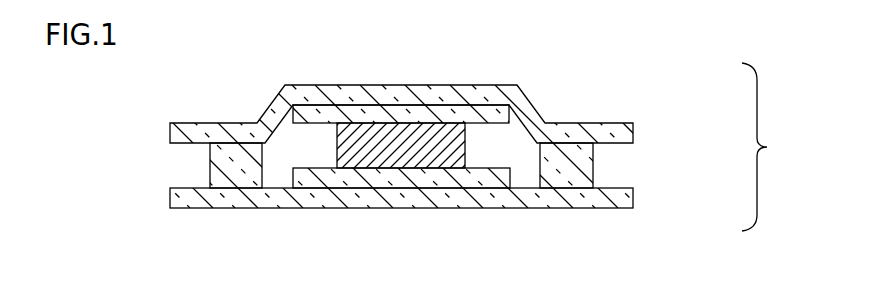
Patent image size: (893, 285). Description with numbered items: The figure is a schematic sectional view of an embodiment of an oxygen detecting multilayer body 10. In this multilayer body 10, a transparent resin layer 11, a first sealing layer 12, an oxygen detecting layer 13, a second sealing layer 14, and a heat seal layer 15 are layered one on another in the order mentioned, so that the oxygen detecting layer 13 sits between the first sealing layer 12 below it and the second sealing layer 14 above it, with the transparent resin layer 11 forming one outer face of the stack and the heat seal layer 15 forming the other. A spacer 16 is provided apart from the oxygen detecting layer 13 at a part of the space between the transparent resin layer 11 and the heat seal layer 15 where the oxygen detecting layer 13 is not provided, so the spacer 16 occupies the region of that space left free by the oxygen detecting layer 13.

The oxygen detecting multilayer body 10 is at (775, 147).
The transparent resin layer 11 is at (620, 196).
The first sealing layer 12 is at (363, 173).
The oxygen detecting layer 13 is at (460, 138).
The second sealing layer 14 is at (297, 113).
The heat seal layer 15 is at (522, 98).
The spacer 16 is at (220, 170).